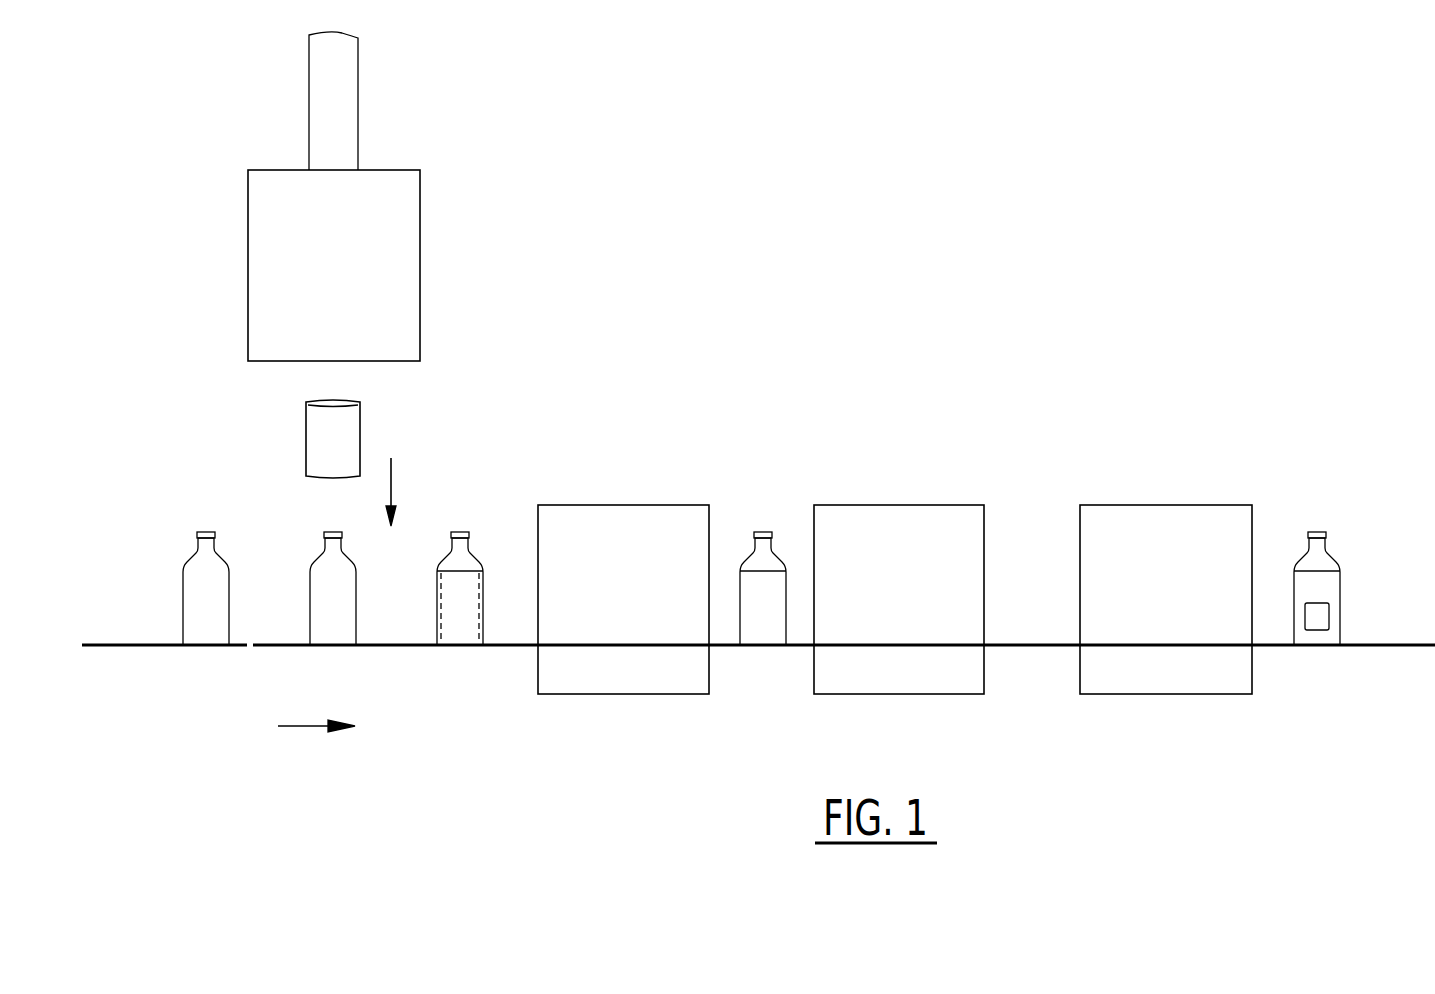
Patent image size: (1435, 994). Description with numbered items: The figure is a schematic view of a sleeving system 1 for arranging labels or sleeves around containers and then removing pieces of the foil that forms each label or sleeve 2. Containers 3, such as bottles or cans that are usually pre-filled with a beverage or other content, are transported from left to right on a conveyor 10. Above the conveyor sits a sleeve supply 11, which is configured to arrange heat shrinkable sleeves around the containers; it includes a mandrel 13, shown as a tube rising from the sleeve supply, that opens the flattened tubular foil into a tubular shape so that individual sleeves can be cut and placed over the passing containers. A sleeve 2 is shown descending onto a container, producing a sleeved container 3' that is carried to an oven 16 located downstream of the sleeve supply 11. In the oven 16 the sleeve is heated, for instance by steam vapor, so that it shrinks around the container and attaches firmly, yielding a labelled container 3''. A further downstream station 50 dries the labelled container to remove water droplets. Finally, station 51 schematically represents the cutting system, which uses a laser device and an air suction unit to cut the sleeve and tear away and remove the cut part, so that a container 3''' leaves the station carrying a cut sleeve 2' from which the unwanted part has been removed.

The sleeving system 1 is at (1063, 323).
The label or sleeve 2 is at (382, 563).
The sleeve without cut part 2' is at (1353, 603).
The container 3 is at (197, 568).
The sleeved container 3' is at (487, 545).
The labelled container 3'' is at (763, 523).
The container having a cut sleeve or label 3''' is at (1349, 575).
The conveyor 10 is at (250, 647).
The sleeve supply 11 is at (334, 265).
The mandrel 13 is at (349, 88).
The oven 16 is at (623, 599).
The downstream station 50 is at (899, 599).
The station 51 is at (1166, 599).